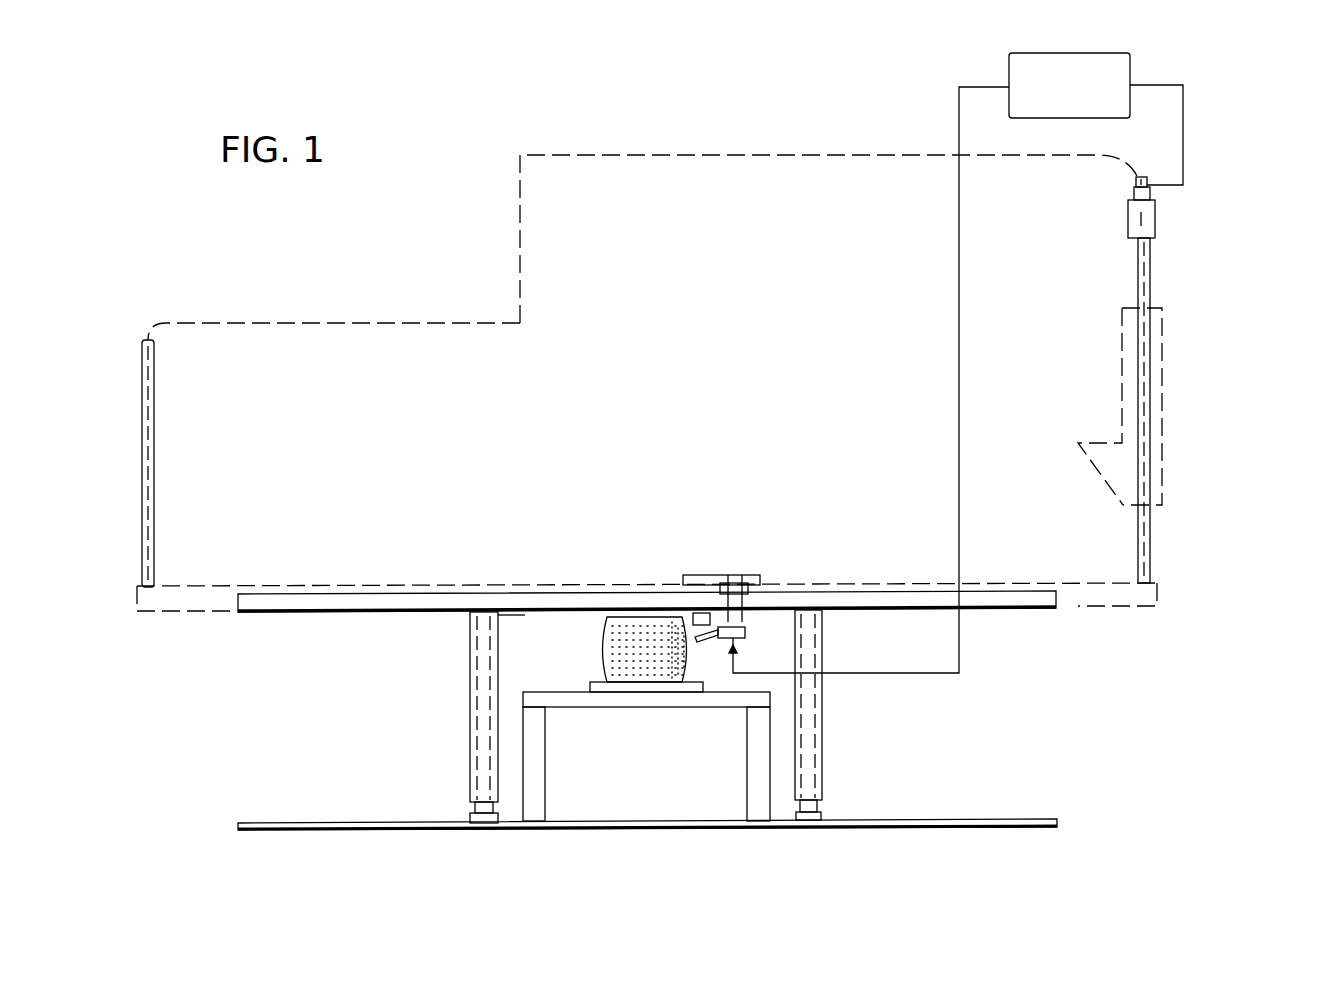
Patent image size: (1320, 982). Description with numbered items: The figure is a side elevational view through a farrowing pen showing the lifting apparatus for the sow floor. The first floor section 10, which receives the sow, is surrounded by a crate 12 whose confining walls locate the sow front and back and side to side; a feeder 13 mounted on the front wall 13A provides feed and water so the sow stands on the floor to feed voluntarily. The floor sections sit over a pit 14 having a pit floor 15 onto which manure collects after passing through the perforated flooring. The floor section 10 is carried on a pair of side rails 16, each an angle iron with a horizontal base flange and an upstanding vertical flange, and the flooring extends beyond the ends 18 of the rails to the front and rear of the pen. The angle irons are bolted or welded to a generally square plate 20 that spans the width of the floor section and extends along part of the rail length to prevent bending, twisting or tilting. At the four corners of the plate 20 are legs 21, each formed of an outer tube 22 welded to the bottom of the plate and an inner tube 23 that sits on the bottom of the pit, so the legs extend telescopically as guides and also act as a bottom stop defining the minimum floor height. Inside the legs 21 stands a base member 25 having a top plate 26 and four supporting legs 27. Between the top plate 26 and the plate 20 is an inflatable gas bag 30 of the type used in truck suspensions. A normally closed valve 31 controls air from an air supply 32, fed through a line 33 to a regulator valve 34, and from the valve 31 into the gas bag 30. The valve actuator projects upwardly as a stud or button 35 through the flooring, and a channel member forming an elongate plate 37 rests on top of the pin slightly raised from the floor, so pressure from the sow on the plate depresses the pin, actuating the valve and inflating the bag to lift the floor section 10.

The first floor section 10 is at (406, 580).
The crate 12 is at (733, 153).
The feeder 13 is at (1108, 432).
The front wall 13A is at (1137, 266).
The pit 14 is at (307, 757).
The pit floor 15 is at (975, 818).
The side rails 16 is at (340, 616).
The ends 18 is at (236, 604).
The plate 20 is at (522, 617).
The legs 21 is at (468, 678).
The outer tube 22 is at (481, 716).
The inner tube 23 is at (481, 745).
The base member 25 is at (572, 690).
The top plate 26 is at (655, 692).
The supporting legs 27 is at (537, 778).
The inflatable gas bag 30 is at (622, 648).
The valve 31 is at (748, 632).
The air supply 32 is at (1006, 63).
The line 33 is at (1186, 139).
The regulator valve 34 is at (1156, 218).
The stud or button 35 is at (736, 576).
The elongate plate 37 is at (683, 576).